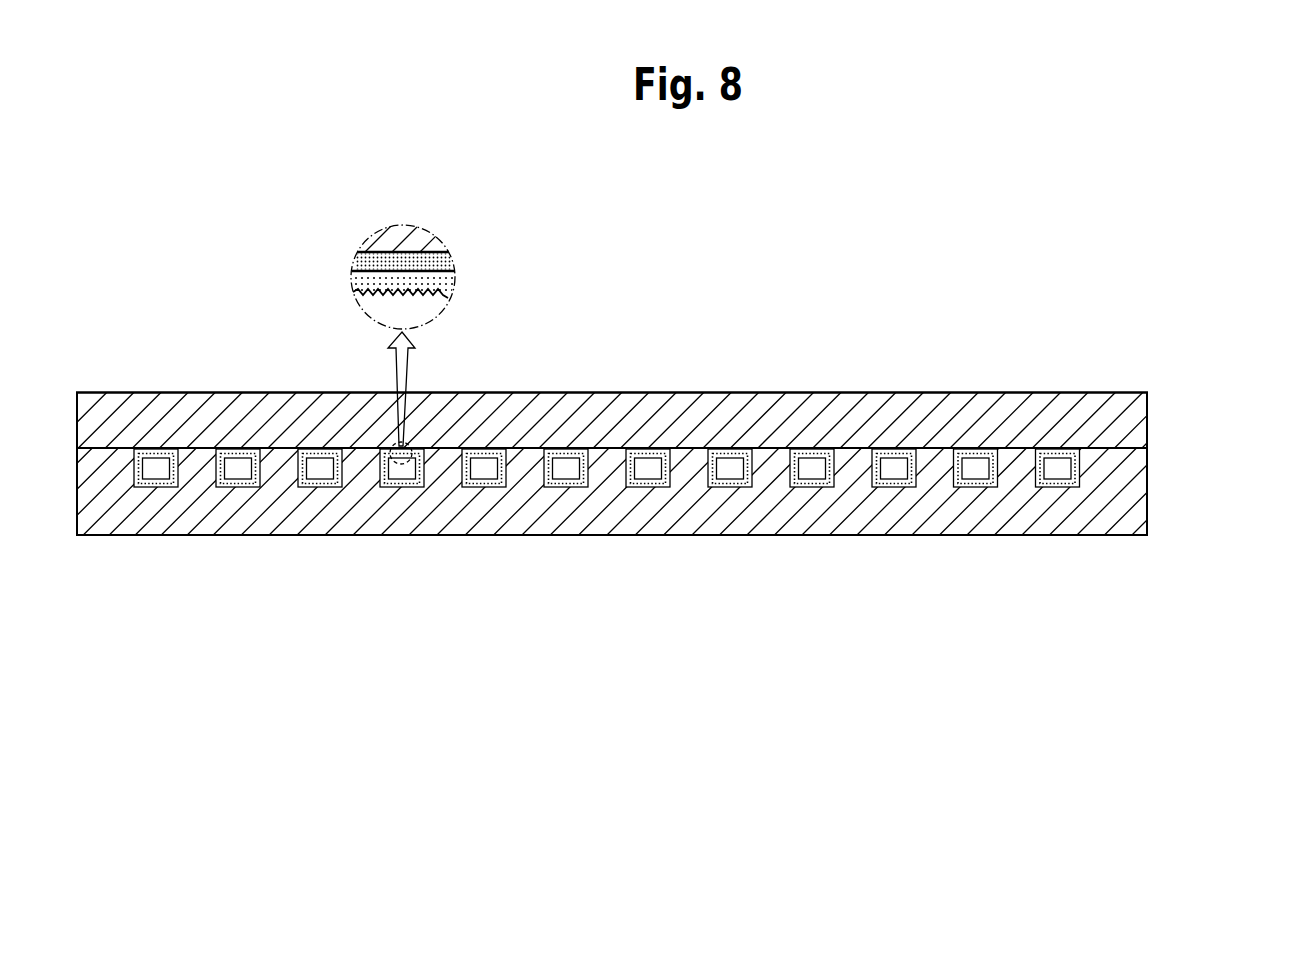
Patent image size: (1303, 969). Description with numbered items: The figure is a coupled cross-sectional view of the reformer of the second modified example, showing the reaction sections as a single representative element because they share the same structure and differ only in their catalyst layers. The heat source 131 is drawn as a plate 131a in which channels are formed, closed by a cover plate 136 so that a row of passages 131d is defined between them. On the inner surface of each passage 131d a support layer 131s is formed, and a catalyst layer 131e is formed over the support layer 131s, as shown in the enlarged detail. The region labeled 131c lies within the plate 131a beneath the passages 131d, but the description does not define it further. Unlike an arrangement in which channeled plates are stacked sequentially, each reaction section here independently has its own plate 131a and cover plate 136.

The heat source 131 is at (1122, 332).
The plate 131a is at (547, 552).
The embedded conductor cell 131c is at (815, 487).
The passage 131d is at (323, 486).
The catalyst layer 131e is at (977, 487).
The support layer 131s is at (975, 449).
The cover plate 136 is at (266, 380).